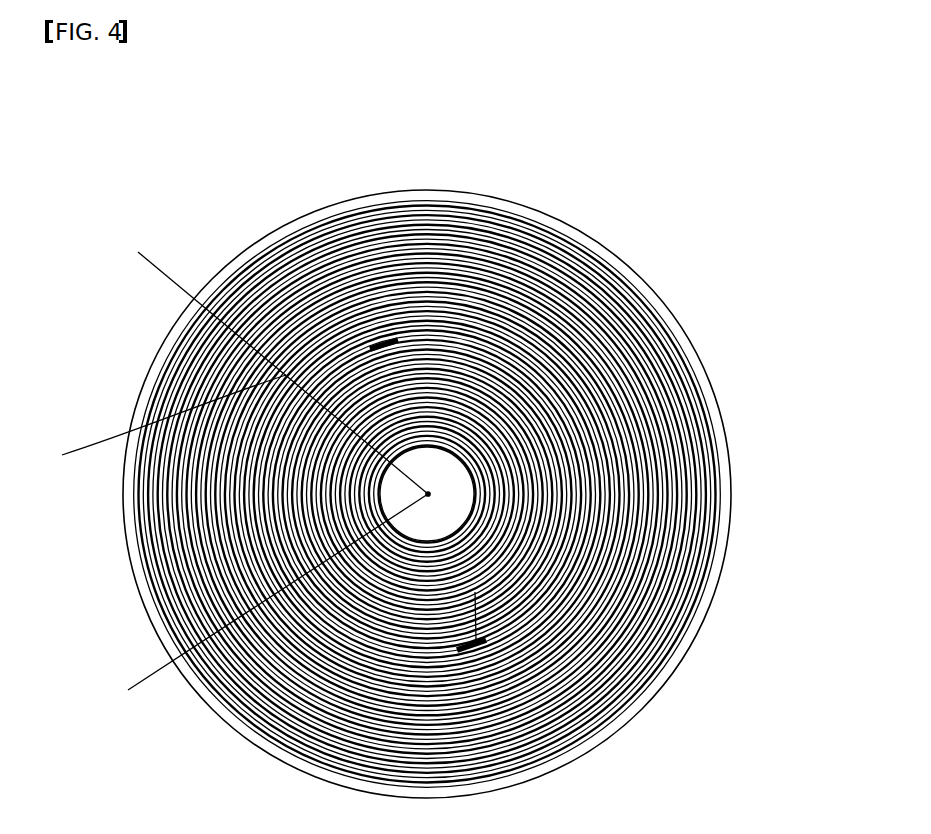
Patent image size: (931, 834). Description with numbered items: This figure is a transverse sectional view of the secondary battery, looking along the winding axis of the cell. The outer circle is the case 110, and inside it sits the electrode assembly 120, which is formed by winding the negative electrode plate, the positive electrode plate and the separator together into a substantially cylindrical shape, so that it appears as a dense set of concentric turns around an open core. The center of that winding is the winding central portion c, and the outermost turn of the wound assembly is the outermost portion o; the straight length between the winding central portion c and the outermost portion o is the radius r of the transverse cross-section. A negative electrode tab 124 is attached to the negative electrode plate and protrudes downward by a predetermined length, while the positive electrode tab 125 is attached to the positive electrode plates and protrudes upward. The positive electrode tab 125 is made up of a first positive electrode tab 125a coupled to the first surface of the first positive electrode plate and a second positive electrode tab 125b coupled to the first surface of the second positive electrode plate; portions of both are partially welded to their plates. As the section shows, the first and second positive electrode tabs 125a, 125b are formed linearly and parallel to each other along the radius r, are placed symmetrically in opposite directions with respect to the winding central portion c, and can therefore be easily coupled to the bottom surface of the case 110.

The case 110 is at (730, 501).
The electrode assembly 120 is at (440, 431).
The negative electrode tab 124 is at (390, 462).
The positive electrode tab 125 is at (427, 431).
The first positive electrode tab 125a is at (487, 462).
The second positive electrode tab 125b is at (393, 341).
The outermost portion o is at (275, 366).
The radius r is at (167, 421).
The winding central portion c is at (270, 600).